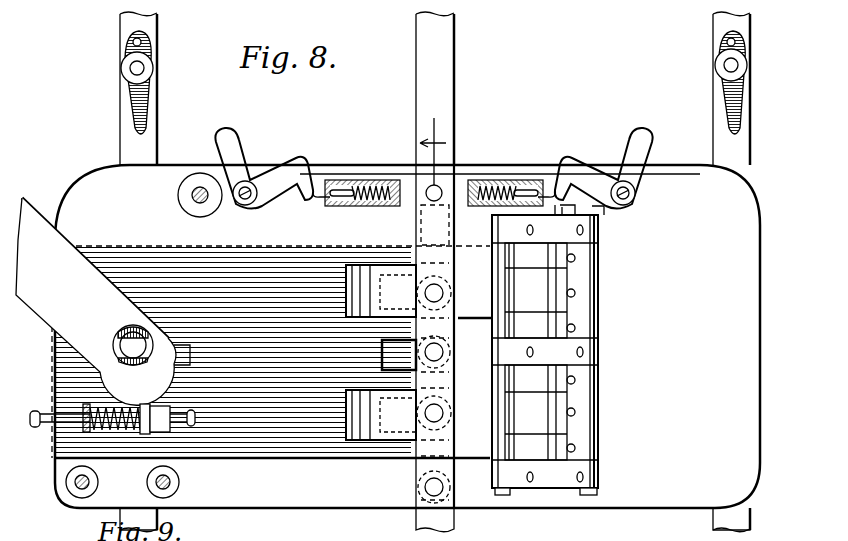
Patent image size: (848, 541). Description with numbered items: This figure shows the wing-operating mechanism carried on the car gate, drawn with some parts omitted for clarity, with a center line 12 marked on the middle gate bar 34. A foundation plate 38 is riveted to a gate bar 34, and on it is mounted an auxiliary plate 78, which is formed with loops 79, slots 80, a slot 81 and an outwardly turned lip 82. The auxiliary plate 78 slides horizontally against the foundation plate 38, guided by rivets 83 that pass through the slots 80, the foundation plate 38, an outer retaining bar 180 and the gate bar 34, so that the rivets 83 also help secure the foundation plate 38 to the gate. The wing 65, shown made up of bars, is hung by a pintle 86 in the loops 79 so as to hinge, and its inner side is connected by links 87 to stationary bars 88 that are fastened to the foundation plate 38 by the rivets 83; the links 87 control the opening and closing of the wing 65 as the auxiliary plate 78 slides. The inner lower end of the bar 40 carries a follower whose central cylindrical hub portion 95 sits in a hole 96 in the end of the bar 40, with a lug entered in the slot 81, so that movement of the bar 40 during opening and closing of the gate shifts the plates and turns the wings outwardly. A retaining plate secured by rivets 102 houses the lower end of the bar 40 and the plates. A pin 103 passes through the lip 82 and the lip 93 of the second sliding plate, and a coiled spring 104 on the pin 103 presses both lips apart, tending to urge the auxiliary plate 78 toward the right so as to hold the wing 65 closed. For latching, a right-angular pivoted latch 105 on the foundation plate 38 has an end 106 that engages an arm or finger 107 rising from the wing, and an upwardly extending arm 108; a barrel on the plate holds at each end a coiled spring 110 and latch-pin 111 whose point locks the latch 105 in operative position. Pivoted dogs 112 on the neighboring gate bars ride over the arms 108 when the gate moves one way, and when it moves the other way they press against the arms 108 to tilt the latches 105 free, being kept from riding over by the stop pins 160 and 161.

The slide bar 12 is at (435, 302).
The gate bar 34 is at (158, 108).
The foundation plate 38 is at (407, 336).
The bar 40 is at (36, 215).
The wing 65 is at (500, 497).
The auxiliary plate 78 is at (271, 352).
The loops 79 is at (598, 290).
The slots 80 is at (388, 298).
The slot 81 is at (183, 360).
The outwardly turned lip 82 is at (145, 432).
The rivets 83 is at (420, 303).
The pintle 86 is at (598, 494).
The links 87 is at (533, 355).
The stationary bars 88 is at (320, 478).
The lip 93 is at (84, 428).
The central cylindrical hub portion 95 is at (130, 338).
The hole 96 is at (120, 342).
The rivets 102 is at (196, 203).
The pin 103 is at (190, 422).
The coiled spring 104 is at (100, 410).
The pivoted latch 105 is at (243, 205).
The end of latch 106 is at (300, 192).
The arm or finger 107 is at (580, 224).
The upwardly extending arm 108 is at (236, 142).
The coiled spring 110 is at (360, 182).
The latch-pin 111 is at (312, 198).
The pivoted dog 112 is at (136, 104).
The stop pin 160 is at (736, 43).
The stop pin 161 is at (134, 43).
The outer retaining bar 180 is at (470, 185).